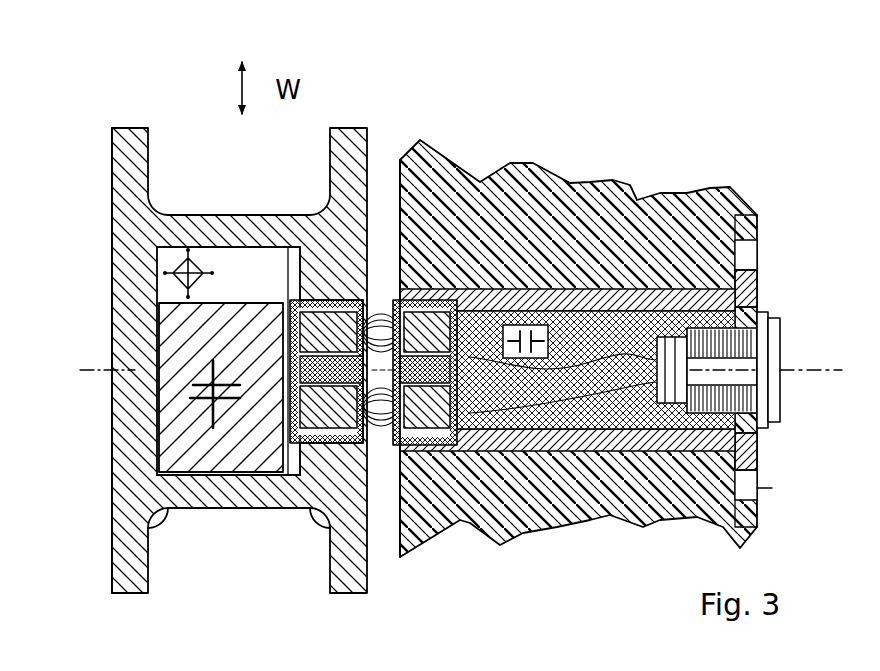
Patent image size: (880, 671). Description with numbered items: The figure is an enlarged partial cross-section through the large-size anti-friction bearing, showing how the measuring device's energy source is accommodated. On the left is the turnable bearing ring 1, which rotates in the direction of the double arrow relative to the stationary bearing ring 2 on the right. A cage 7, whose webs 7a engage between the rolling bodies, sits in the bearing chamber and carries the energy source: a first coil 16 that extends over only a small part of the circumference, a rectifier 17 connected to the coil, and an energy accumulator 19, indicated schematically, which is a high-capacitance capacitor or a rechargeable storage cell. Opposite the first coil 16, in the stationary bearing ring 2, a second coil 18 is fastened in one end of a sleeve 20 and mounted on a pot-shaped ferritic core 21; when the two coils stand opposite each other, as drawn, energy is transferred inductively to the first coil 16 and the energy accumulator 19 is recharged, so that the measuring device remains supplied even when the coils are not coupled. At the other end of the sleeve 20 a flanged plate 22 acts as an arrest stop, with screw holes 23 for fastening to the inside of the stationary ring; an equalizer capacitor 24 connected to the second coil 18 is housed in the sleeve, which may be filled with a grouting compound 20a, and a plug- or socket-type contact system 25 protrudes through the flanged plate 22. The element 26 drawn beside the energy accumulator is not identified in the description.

The turnable bearing ring 1 is at (127, 455).
The stationary bearing ring 2 is at (693, 228).
The cage 7 is at (369, 104).
The web 7a is at (226, 480).
The first coil 16 is at (325, 440).
The rectifier 17 is at (188, 256).
The second coil 18 is at (422, 448).
The energy accumulator 19 is at (217, 304).
The sleeve 20 is at (618, 298).
The grouting compound 20a is at (543, 420).
The ferritic core 21 is at (440, 308).
The flanged plate 22 is at (754, 278).
The screw holes 23 is at (754, 248).
The equalizer capacitor 24 is at (528, 323).
The contact system 25 is at (758, 396).
The liner 26 is at (301, 330).